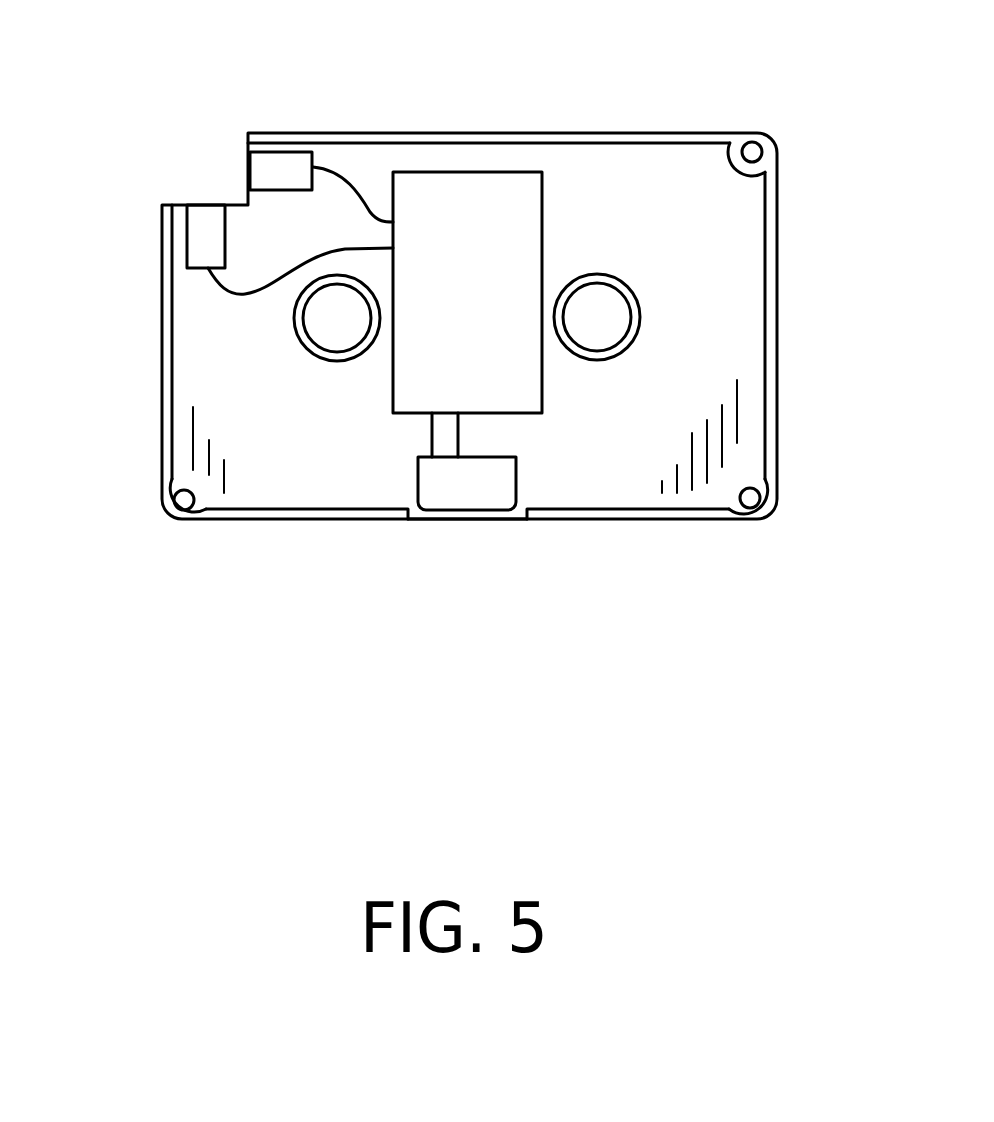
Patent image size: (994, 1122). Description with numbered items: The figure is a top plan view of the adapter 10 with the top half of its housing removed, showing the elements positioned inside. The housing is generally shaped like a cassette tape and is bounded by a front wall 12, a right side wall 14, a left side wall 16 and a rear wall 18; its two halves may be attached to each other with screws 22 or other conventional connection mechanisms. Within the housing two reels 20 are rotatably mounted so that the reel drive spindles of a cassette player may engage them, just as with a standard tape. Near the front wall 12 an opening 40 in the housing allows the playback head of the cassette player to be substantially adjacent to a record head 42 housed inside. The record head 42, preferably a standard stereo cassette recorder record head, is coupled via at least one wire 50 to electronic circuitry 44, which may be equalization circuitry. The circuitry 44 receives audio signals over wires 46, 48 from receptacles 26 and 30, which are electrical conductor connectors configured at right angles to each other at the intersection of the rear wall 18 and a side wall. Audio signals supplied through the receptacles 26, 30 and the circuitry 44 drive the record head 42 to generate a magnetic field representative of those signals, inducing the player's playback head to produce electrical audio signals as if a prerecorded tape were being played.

The adapter 10 is at (612, 620).
The front wall 12 is at (268, 521).
The right side wall 14 is at (777, 328).
The left side wall 16 is at (162, 349).
The rear wall 18 is at (645, 132).
The reels 20 is at (307, 350).
The screws 22 is at (757, 142).
The receptacle 26 is at (270, 173).
The receptacle 30 is at (207, 228).
The opening 40 is at (466, 520).
The record head 42 is at (517, 472).
The electronic circuitry 44 is at (541, 228).
The wire 46 is at (358, 190).
The wire 48 is at (233, 292).
The wire 50 is at (430, 440).